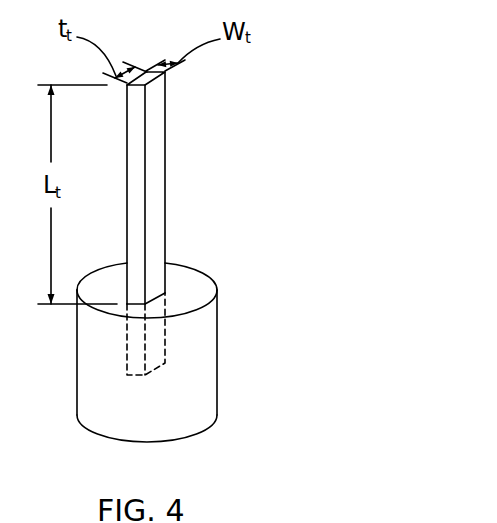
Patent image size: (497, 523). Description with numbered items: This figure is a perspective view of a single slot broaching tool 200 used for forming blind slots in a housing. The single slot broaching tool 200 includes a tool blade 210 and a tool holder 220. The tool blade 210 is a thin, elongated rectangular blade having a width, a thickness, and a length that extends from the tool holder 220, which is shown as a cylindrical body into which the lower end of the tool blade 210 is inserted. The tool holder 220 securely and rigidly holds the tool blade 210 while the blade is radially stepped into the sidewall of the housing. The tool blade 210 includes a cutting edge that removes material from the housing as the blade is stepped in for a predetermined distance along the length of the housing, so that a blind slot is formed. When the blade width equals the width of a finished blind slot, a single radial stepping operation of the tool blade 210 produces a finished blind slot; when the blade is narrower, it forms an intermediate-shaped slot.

The single slot broaching tool 200 is at (323, 153).
The tool blade 210 is at (155, 195).
The tool holder 220 is at (203, 370).